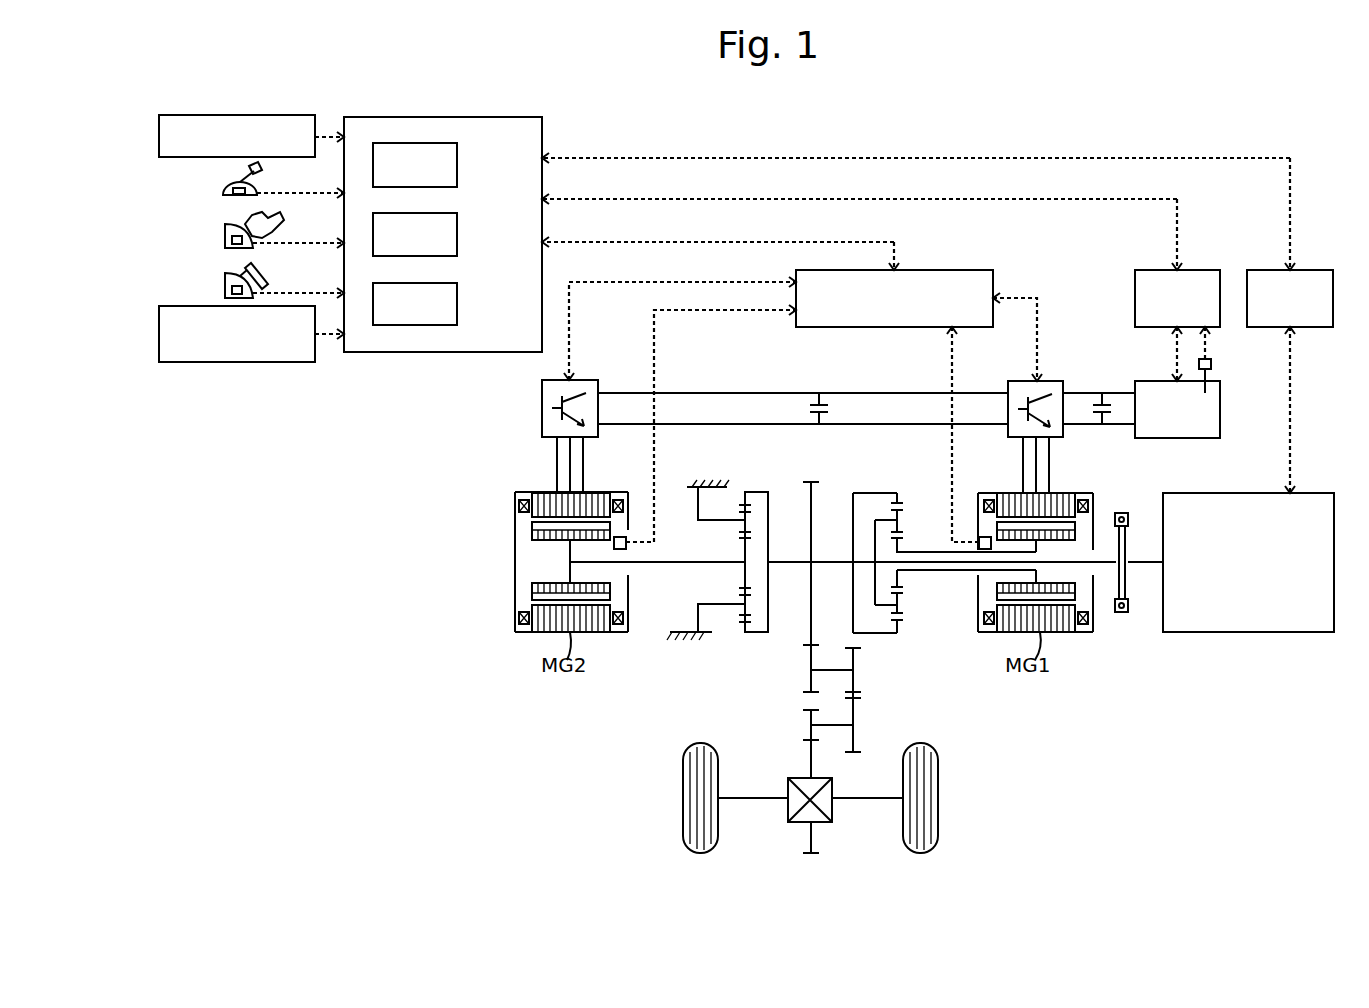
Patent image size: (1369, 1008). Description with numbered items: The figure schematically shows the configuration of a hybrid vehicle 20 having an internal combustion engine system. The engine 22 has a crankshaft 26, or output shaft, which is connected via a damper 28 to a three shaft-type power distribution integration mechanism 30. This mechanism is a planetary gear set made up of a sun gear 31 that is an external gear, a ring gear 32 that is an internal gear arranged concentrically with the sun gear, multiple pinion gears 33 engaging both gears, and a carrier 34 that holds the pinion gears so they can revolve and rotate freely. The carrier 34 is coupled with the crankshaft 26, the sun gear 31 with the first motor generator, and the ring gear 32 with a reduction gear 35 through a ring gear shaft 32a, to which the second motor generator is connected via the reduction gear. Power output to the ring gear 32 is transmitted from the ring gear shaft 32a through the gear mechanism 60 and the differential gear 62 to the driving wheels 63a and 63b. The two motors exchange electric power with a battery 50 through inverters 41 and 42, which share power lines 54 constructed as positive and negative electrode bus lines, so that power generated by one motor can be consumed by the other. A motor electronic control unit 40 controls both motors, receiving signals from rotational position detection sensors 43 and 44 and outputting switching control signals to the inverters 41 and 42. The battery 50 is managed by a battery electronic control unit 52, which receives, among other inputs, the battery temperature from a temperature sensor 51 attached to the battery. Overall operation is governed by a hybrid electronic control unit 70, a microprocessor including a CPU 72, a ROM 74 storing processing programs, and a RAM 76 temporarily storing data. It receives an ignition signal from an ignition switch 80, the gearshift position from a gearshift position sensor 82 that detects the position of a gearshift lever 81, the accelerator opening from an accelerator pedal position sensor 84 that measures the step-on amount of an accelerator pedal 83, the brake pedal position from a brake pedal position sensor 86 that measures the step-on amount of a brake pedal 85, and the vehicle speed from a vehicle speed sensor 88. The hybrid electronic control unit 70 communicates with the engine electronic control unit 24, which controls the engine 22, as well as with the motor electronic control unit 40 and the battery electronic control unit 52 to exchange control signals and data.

The hybrid vehicle 20 is at (1077, 114).
The engine 22 is at (1255, 632).
The engine electronic control unit 24 is at (1318, 270).
The crankshaft 26 is at (1148, 564).
The damper 28 is at (1121, 612).
The power distribution integration mechanism 30 is at (944, 536).
The sun gear 31 is at (900, 580).
The ring gear 32 is at (900, 622).
The ring gear shaft 32a is at (832, 560).
The pinion gears 33 is at (900, 600).
The carrier 34 is at (875, 520).
The reduction gear 35 is at (755, 473).
The motor electronic control unit 40 is at (937, 270).
The inverter 41 is at (1050, 381).
The inverter 42 is at (578, 380).
The rotational position detection sensor 43 is at (984, 537).
The rotational position detection sensor 44 is at (622, 537).
The battery 50 is at (1178, 438).
The temperature sensor 51 is at (1211, 364).
The battery electronic control unit 52 is at (1205, 270).
The power lines 54 is at (898, 393).
The gear mechanism 60 is at (883, 709).
The differential gear 62 is at (835, 810).
The driving wheel 63a is at (683, 798).
The driving wheel 63b is at (938, 798).
The hybrid electronic control unit 70 is at (447, 117).
The CPU 72 is at (457, 165).
The ROM 74 is at (457, 235).
The RAM 76 is at (457, 304).
The ignition switch 80 is at (159, 133).
The gearshift lever 81 is at (240, 180).
The gearshift position sensor 82 is at (223, 193).
The accelerator pedal 83 is at (252, 218).
The accelerator pedal position sensor 84 is at (225, 243).
The brake pedal 85 is at (248, 268).
The brake pedal position sensor 86 is at (225, 293).
The vehicle speed sensor 88 is at (159, 331).